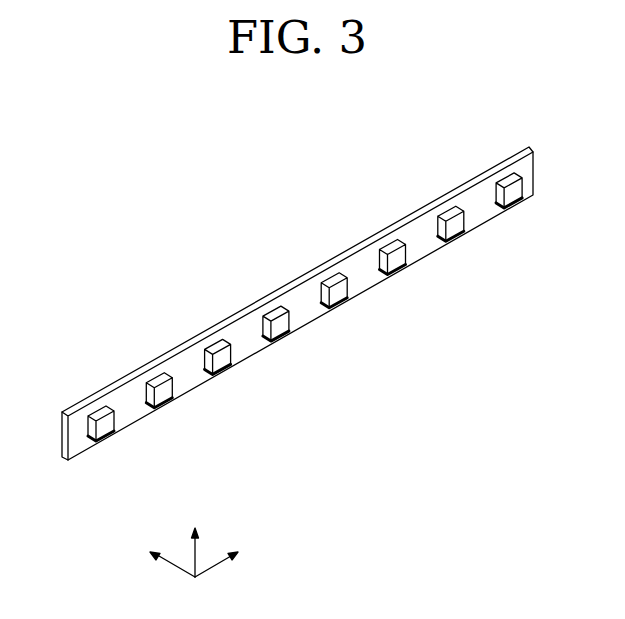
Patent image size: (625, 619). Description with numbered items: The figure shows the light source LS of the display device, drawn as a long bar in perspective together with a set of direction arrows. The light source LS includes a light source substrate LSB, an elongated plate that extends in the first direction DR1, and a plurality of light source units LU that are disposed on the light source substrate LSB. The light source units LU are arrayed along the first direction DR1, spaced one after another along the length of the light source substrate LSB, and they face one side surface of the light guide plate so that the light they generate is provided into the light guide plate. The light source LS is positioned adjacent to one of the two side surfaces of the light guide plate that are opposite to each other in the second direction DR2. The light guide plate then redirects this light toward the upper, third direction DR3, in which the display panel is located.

The light source LS is at (105, 297).
The light source substrate LSB is at (127, 380).
The light source units LU is at (105, 420).
The first direction DR1 is at (236, 559).
The second direction DR2 is at (153, 559).
The third direction DR3 is at (195, 540).